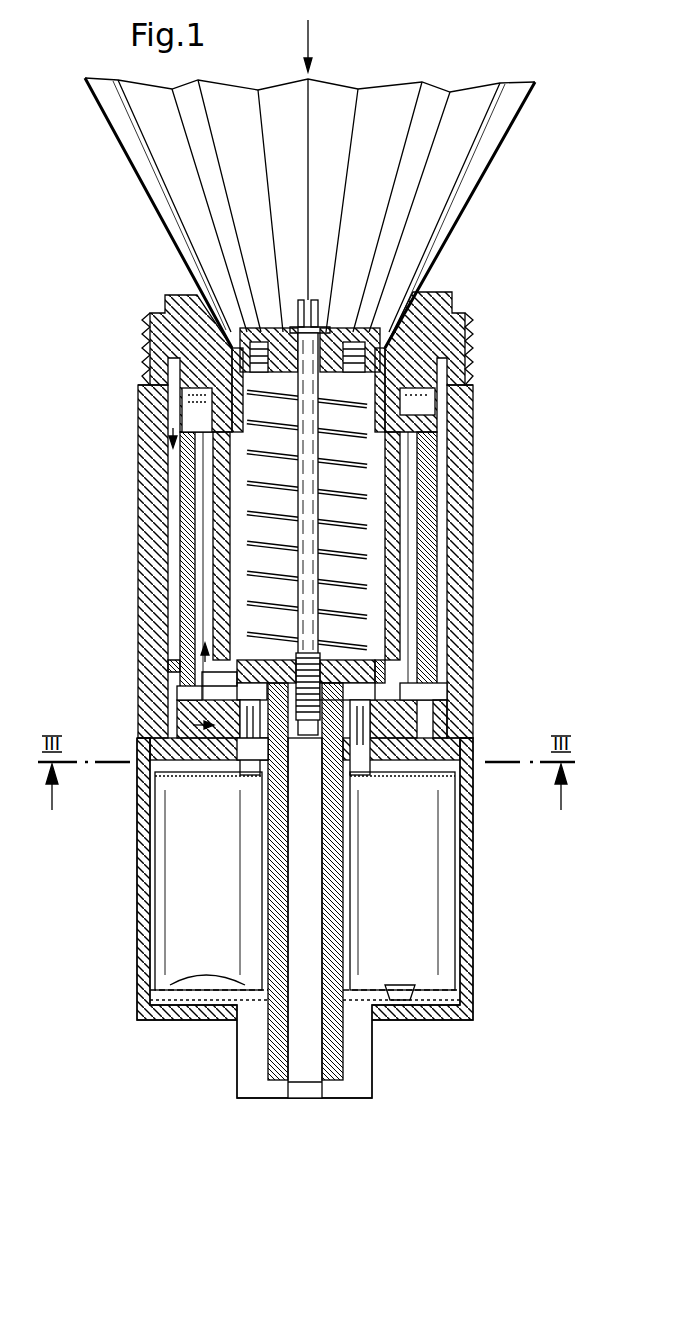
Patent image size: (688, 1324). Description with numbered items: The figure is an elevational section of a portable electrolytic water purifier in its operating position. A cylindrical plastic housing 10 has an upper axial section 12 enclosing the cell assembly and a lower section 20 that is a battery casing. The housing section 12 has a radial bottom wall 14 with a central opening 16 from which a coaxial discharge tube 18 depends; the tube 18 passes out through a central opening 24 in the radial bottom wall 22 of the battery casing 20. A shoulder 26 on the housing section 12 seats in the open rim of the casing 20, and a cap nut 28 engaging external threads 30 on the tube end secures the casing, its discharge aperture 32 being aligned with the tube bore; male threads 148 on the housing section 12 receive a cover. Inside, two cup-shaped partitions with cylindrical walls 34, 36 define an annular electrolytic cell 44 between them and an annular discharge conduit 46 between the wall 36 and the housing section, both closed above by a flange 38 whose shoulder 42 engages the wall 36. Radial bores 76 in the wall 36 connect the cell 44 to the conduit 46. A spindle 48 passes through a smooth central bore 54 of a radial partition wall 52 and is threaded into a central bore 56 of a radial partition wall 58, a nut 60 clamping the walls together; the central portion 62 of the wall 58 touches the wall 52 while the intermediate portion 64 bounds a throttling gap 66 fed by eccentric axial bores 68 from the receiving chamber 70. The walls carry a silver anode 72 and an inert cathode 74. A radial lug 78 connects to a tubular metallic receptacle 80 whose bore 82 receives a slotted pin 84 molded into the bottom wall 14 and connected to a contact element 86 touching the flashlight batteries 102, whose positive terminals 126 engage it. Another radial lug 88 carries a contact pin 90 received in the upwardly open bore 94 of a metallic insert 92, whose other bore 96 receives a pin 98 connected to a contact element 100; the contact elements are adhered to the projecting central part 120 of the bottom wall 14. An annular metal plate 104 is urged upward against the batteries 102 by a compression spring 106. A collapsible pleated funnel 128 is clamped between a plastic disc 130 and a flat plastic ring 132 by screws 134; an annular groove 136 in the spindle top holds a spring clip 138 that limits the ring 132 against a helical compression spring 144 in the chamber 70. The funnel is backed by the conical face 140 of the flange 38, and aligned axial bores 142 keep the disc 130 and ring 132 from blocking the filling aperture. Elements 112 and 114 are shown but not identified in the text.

The housing 10 is at (100, 252).
The upper axial housing section 12 is at (460, 482).
The radial bottom wall 14 is at (238, 762).
The central opening 16 is at (306, 569).
The discharge tube 18 is at (336, 890).
The lower section / battery casing 20 is at (465, 940).
The radial bottom wall of battery casing 22 is at (418, 1015).
The central opening 24 is at (250, 1020).
The shoulder 26 is at (447, 752).
The cap nut 28 is at (367, 1097).
The external threads 30 is at (253, 1068).
The discharge aperture 32 is at (307, 1093).
The inner partition wall 34 is at (412, 570).
The outer partition wall 36 is at (180, 515).
The flange 38 is at (443, 332).
The shoulder of flange 42 is at (413, 377).
The annular electrolytic cell 44 is at (438, 507).
The annular discharge conduit 46 is at (442, 538).
The spindle 48 is at (320, 472).
The radial partition wall 52 is at (180, 677).
The smooth central bore 54 is at (268, 660).
The threaded central bore 56 is at (345, 660).
The radial partition wall 58 is at (150, 762).
The nut 60 is at (326, 653).
The central portion 62 is at (410, 640).
The intermediate portion 64 is at (240, 715).
The throttling gap 66 is at (225, 693).
The eccentric axial bores 68 is at (268, 662).
The receiving chamber 70 is at (175, 478).
The anode 72 is at (210, 427).
The cathode 74 is at (175, 450).
The radial bores 76 is at (182, 395).
The radial lug 78 is at (222, 680).
The tubular metallic receptacle 80 is at (215, 748).
The bore of receptacle 82 is at (207, 730).
The contact pin 84 is at (250, 778).
The contact element 86 is at (205, 758).
The radial lug 88 is at (417, 680).
The contact pin 90 is at (413, 663).
The metallic insert 92 is at (400, 692).
The upwardly open bore 94 is at (410, 722).
The downwardly open bore 96 is at (322, 808).
The contact pin 98 is at (360, 758).
The contact element 100 is at (408, 762).
The flashlight batteries 102 is at (162, 880).
The annular metal plate 104 is at (148, 1008).
The compression spring 106 is at (222, 1020).
The wall 112 is at (452, 786).
The wall 114 is at (185, 762).
The projecting central part 120 is at (413, 772).
The positive terminals 126 is at (208, 770).
The collapsible funnel 128 is at (498, 155).
The plastic disc 130 is at (442, 330).
The flat plastic ring 132 is at (413, 295).
The screws 134 is at (263, 300).
The annular groove 136 is at (344, 300).
The spring clip 138 is at (284, 300).
The conical face 140 is at (184, 295).
The axial bores 142 is at (373, 298).
The helical compression spring 144 is at (255, 400).
The male threads 148 is at (448, 372).